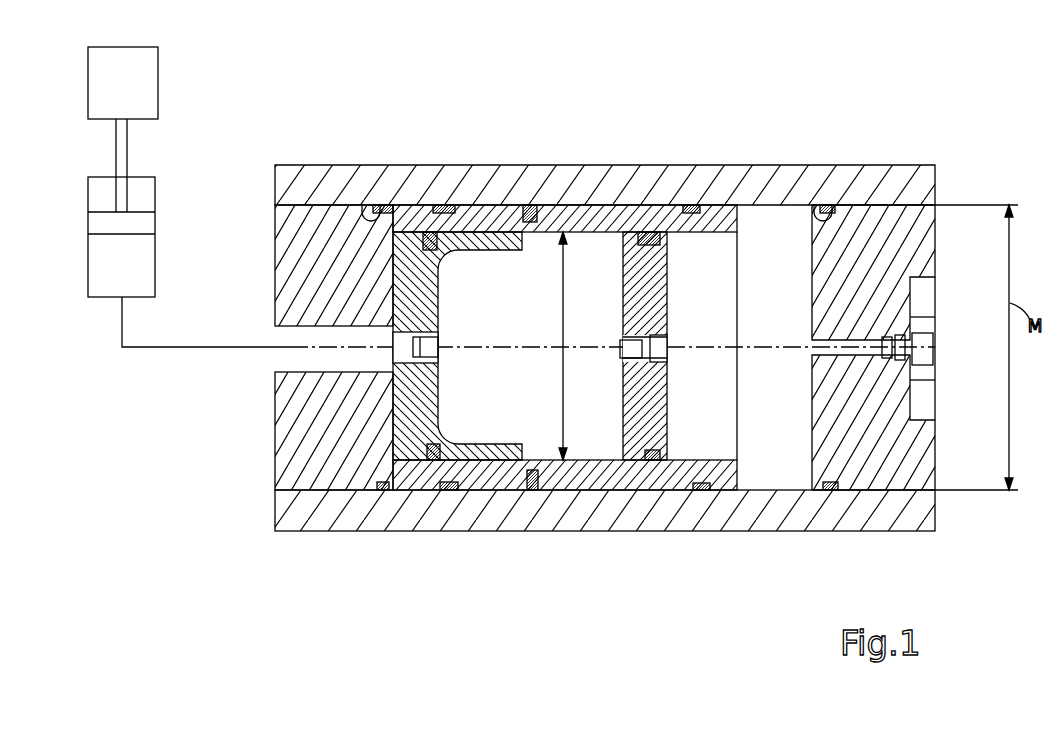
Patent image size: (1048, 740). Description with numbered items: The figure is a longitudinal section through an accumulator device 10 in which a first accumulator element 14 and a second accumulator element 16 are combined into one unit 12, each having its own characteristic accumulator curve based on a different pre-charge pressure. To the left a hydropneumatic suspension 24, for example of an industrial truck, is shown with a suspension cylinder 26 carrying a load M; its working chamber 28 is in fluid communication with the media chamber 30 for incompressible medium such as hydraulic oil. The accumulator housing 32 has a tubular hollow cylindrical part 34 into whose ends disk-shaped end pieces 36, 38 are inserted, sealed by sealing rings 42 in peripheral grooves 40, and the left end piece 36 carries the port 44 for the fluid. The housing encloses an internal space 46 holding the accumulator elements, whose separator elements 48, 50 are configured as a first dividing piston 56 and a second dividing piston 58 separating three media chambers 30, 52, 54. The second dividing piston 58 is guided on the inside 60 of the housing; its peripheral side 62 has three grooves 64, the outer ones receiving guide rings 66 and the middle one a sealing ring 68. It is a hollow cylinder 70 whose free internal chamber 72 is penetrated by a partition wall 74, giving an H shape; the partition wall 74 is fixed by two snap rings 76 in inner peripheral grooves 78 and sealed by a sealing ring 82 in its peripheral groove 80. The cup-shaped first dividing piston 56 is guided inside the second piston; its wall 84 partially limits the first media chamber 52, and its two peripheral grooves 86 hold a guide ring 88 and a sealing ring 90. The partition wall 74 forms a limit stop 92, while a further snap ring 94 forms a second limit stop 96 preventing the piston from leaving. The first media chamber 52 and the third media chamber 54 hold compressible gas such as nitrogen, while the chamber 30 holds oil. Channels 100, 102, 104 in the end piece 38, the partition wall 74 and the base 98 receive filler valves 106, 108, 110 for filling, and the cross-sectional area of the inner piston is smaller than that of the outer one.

The accumulator device 10 is at (603, 334).
The unit 12 is at (1014, 70).
The first accumulator element 14 is at (597, 206).
The second accumulator element 16 is at (481, 229).
The hydropneumatic suspension 24 is at (82, 150).
The suspension cylinder 26 is at (157, 190).
The working chamber 28 is at (107, 262).
The media chamber 30 is at (335, 392).
The accumulator housing 32 is at (453, 490).
The tubular hollow cylindrical part 34 is at (332, 165).
The end piece 36 is at (275, 222).
The end piece 38 is at (935, 235).
The peripheral grooves 40 is at (353, 165).
The sealing rings 42 is at (385, 492).
The port 44 is at (290, 357).
The internal space 46 is at (530, 452).
The separator element 48 is at (562, 215).
The separator element 50 is at (393, 440).
The first media chamber 52 is at (477, 455).
The third media chamber 54 is at (763, 463).
The first dividing piston 56 is at (224, 515).
The second dividing piston 58 is at (614, 72).
The inside 60 is at (782, 214).
The peripheral side 62 is at (640, 205).
The grooves 64 is at (415, 205).
The guide rings 66 is at (448, 490).
The sealing ring 68 is at (466, 409).
The hollow cylinder 70 is at (670, 420).
The free internal chamber 72 is at (757, 207).
The partition wall 74 is at (667, 400).
The snap rings 76 is at (620, 456).
The inner peripheral grooves 78 is at (610, 232).
The peripheral groove 80 is at (623, 303).
The sealing ring 82 is at (623, 403).
The wall 84 is at (470, 250).
The peripheral grooves 86 is at (440, 268).
The guide ring 88 is at (500, 440).
The sealing ring 90 is at (433, 450).
The limit stop 92 is at (615, 488).
The further snap ring 94 is at (393, 240).
The second limit stop 96 is at (395, 462).
The base 98 is at (393, 288).
The channel 100 is at (812, 395).
The channel 102 is at (667, 325).
The channel 104 is at (438, 328).
The filler valve 106 is at (925, 348).
The filler valve 108 is at (660, 347).
The filler valve 110 is at (430, 350).